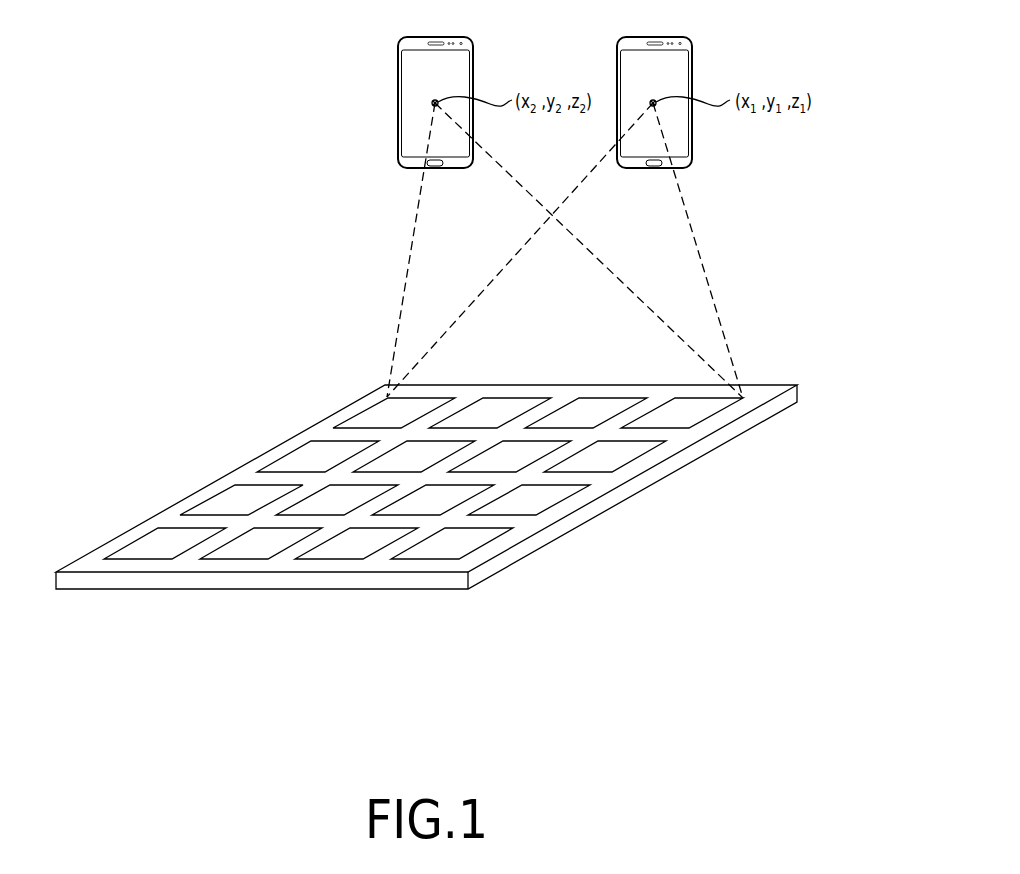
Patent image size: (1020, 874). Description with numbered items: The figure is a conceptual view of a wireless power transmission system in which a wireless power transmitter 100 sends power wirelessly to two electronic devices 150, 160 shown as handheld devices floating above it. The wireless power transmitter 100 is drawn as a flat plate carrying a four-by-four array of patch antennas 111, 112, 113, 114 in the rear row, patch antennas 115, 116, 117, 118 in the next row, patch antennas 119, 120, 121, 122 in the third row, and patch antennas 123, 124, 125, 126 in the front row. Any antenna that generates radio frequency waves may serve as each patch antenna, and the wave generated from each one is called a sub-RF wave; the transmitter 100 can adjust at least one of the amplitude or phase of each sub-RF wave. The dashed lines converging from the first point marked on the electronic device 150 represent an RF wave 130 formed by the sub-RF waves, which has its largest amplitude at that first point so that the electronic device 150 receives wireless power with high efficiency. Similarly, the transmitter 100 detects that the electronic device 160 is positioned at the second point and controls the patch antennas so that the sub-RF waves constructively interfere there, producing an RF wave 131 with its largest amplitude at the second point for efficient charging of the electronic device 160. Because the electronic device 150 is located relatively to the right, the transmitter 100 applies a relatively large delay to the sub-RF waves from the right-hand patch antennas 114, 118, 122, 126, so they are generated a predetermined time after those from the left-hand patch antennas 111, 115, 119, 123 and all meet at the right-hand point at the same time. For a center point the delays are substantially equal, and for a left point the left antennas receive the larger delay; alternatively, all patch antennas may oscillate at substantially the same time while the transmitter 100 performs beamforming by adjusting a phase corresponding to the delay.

The wireless power transmitter 100 is at (797, 385).
The patch antenna 111 is at (378, 410).
The patch antenna 112 is at (510, 410).
The patch antenna 113 is at (599, 410).
The patch antenna 114 is at (703, 408).
The patch antenna 115 is at (398, 452).
The patch antenna 116 is at (302, 458).
The patch antenna 117 is at (547, 443).
The patch antenna 118 is at (620, 457).
The patch antenna 119 is at (223, 503).
The patch antenna 120 is at (325, 502).
The patch antenna 121 is at (470, 490).
The patch antenna 122 is at (540, 502).
The patch antenna 123 is at (155, 543).
The patch antenna 124 is at (252, 545).
The patch antenna 125 is at (352, 545).
The patch antenna 126 is at (470, 543).
The RF wave 130 is at (680, 257).
The RF wave 131 is at (426, 257).
The electronic device 150 is at (692, 45).
The electronic device 160 is at (473, 45).